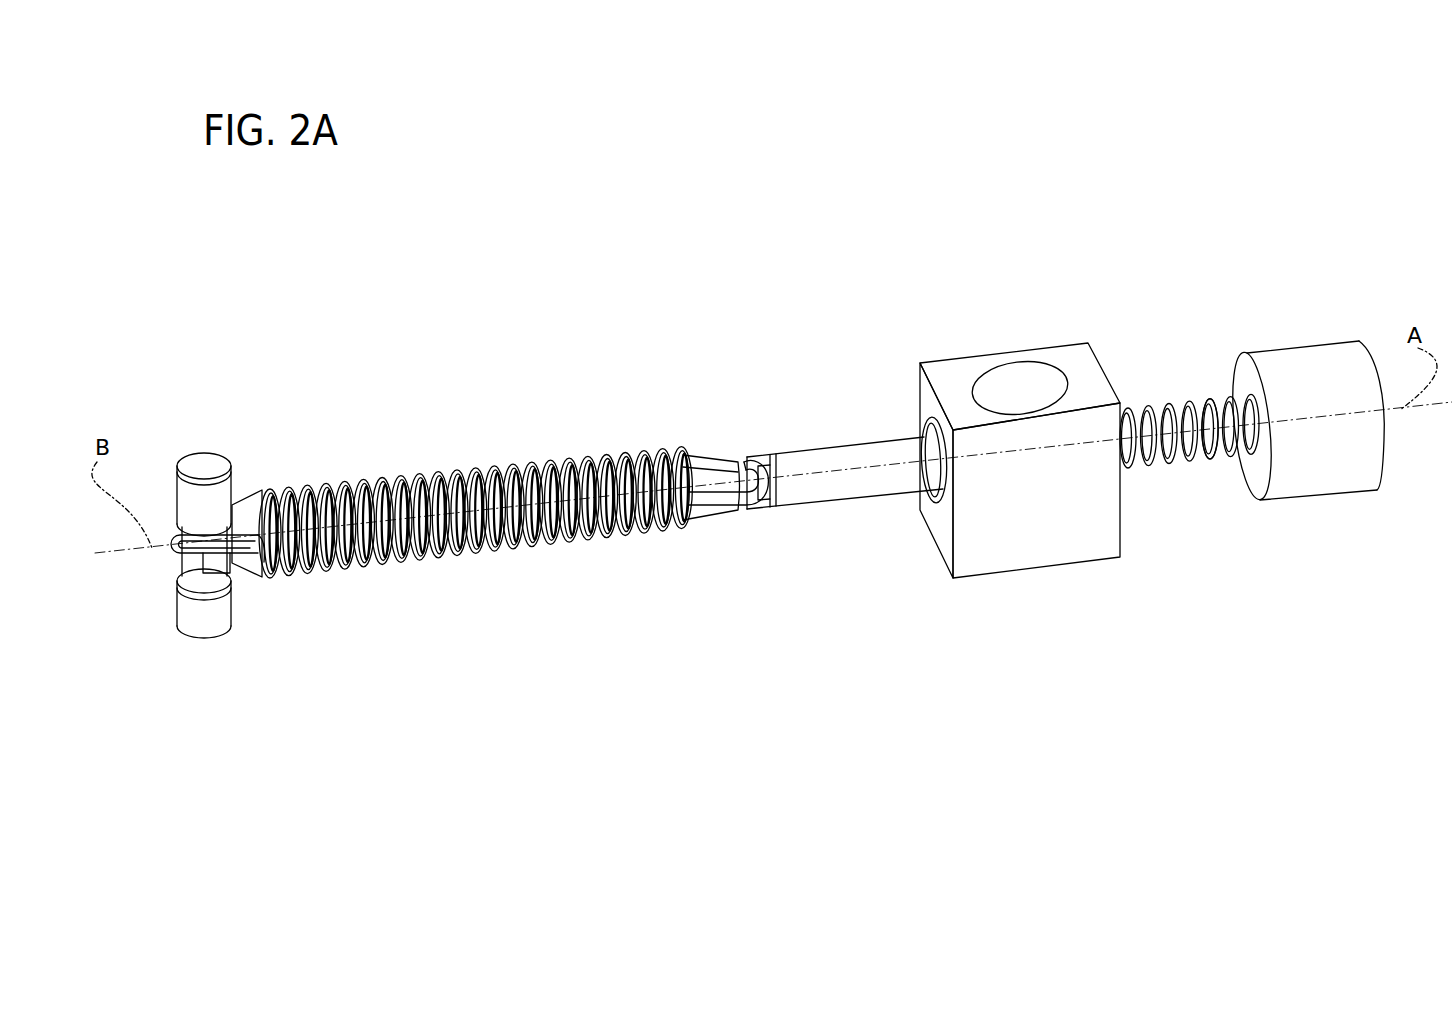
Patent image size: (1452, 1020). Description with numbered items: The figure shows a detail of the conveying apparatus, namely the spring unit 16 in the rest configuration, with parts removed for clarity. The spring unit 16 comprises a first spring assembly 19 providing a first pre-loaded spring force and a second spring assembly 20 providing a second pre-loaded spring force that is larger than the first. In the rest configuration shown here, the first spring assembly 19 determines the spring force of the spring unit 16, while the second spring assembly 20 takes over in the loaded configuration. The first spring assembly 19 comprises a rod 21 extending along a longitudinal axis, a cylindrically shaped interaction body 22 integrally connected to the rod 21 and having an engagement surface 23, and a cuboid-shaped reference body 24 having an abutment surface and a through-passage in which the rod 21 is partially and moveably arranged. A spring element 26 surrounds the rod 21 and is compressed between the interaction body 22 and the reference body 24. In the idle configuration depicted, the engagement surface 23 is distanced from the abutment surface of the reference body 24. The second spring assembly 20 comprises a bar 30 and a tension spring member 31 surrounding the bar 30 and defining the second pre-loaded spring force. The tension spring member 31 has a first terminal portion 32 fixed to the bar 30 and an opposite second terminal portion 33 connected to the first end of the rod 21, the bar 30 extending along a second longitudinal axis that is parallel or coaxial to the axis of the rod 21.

The spring unit 16 is at (1077, 243).
The first spring assembly 19 is at (1358, 305).
The second spring assembly 20 is at (307, 688).
The rod 21 is at (870, 452).
The interaction body 22 is at (1313, 360).
The engagement surface 23 is at (1237, 378).
The reference body 24 is at (955, 362).
The spring element 26 is at (1205, 465).
The bar 30 is at (706, 466).
The tension spring member 31 is at (524, 556).
The first terminal portion 32 is at (172, 552).
The second terminal portion 33 is at (758, 513).